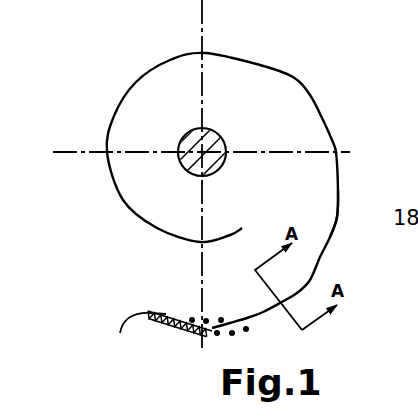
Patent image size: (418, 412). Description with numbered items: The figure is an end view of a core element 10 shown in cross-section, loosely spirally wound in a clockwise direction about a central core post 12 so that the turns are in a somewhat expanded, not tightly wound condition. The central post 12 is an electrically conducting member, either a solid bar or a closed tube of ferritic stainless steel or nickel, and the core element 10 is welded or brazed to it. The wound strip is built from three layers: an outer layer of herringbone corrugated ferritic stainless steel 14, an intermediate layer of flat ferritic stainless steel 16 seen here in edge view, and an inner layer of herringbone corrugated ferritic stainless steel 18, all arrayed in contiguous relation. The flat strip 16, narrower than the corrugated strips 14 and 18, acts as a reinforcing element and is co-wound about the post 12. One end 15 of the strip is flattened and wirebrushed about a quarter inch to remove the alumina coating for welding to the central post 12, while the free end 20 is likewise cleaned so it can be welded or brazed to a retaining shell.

The core element 10 is at (300, 72).
The central core post 12 is at (186, 164).
The outer layer of herringbone corrugated ferritic stainless steel 14 is at (183, 330).
The one end of the strip 15 is at (184, 140).
The intermediate layer of flat ferritic stainless steel 16 is at (337, 217).
The inner layer of herringbone corrugated ferritic stainless steel 18 is at (176, 312).
The free end 20 is at (134, 337).